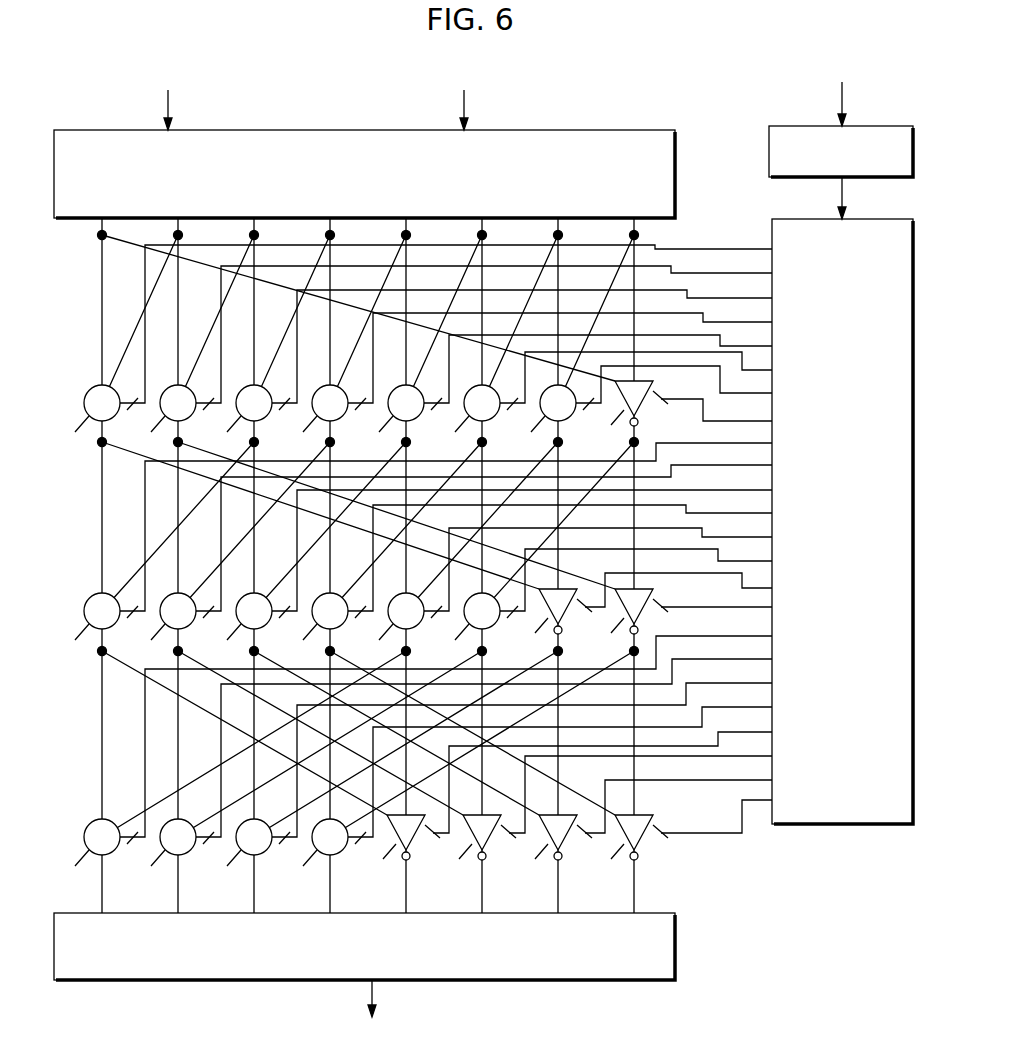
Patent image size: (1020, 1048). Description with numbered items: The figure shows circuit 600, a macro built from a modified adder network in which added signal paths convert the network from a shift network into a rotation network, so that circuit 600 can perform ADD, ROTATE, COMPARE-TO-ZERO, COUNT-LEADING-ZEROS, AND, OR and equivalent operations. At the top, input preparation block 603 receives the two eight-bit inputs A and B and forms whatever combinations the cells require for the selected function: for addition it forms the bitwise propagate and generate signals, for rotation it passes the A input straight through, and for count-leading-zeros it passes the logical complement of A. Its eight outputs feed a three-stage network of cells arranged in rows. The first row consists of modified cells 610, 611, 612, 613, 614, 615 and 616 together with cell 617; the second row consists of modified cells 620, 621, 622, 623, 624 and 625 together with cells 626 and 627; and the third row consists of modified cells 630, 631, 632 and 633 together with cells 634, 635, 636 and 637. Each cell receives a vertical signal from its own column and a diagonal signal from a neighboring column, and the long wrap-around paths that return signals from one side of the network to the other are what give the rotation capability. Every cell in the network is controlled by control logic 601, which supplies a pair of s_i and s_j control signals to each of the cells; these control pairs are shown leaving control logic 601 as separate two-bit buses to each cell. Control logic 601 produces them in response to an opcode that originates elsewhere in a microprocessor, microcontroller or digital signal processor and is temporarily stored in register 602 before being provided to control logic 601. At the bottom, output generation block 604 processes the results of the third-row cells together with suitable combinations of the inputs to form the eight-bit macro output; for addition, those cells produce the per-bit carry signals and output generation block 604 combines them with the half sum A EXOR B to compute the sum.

The circuit 600 is at (92, 108).
The control logic 601 is at (849, 826).
The register 602 is at (873, 122).
The input preparation block 603 is at (622, 125).
The output generation block 604 is at (603, 980).
The modified cell 610 is at (416, 349).
The modified cell 611 is at (455, 358).
The modified cell 612 is at (492, 372).
The modified cell 613 is at (530, 383).
The modified cell 614 is at (568, 394).
The modified cell 615 is at (606, 402).
The modified cell 616 is at (644, 409).
The cell 617 is at (683, 409).
The modified cell 620 is at (415, 551).
The modified cell 621 is at (456, 562).
The modified cell 622 is at (493, 574).
The modified cell 623 is at (531, 582).
The modified cell 624 is at (569, 593).
The modified cell 625 is at (607, 604).
The cell 626 is at (645, 614).
The cell 627 is at (682, 622).
The modified cell 630 is at (414, 761).
The modified cell 631 is at (456, 772).
The modified cell 632 is at (493, 784).
The modified cell 633 is at (531, 796).
The cell 634 is at (571, 805).
The cell 635 is at (609, 817).
The cell 636 is at (647, 829).
The cell 637 is at (685, 839).